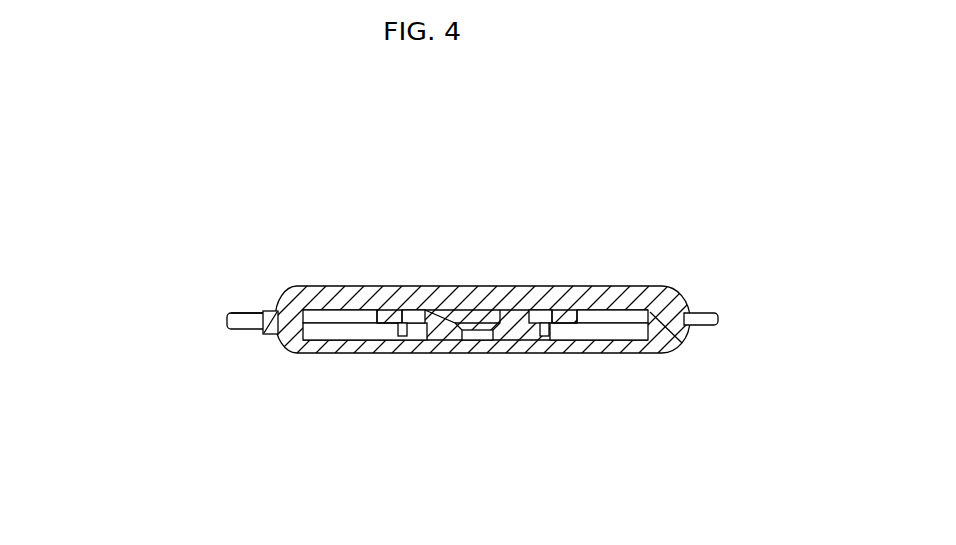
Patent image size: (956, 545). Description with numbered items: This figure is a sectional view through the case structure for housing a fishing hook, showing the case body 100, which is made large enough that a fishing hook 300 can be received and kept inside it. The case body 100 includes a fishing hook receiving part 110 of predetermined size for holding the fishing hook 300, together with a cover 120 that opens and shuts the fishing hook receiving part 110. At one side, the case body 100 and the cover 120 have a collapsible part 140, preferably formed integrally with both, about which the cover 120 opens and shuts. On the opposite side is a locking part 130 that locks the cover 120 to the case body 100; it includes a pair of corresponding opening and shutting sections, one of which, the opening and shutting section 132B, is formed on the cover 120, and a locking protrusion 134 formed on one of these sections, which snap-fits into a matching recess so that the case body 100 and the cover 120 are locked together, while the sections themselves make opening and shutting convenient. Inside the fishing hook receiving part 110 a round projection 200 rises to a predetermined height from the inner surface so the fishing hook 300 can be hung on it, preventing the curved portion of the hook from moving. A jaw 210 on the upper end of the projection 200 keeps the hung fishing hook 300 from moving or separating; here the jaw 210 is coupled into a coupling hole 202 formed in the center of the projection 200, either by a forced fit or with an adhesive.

The case body 100 is at (636, 255).
The fishing hook receiving part 110 is at (599, 327).
The cover 120 is at (523, 297).
The locking part 130 is at (210, 324).
The opening and shutting section 132B is at (238, 310).
The locking protrusion 134 is at (266, 333).
The collapsible part 140 is at (699, 327).
The projection 200 is at (465, 294).
The coupling hole 202 is at (497, 342).
The jaw 210 is at (405, 309).
The fishing hook 300 is at (401, 328).